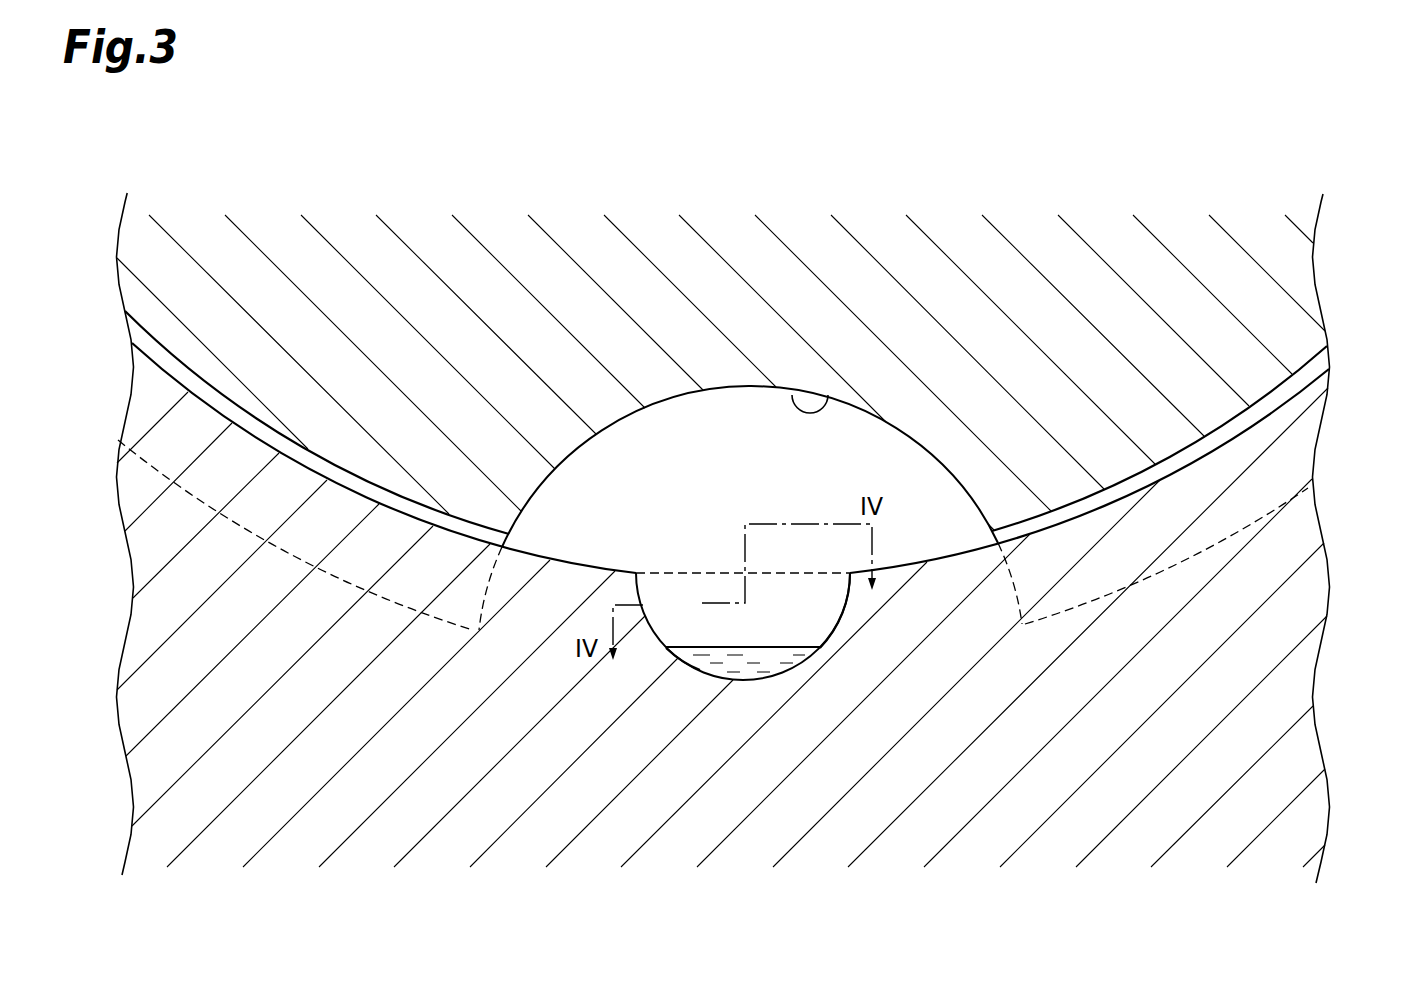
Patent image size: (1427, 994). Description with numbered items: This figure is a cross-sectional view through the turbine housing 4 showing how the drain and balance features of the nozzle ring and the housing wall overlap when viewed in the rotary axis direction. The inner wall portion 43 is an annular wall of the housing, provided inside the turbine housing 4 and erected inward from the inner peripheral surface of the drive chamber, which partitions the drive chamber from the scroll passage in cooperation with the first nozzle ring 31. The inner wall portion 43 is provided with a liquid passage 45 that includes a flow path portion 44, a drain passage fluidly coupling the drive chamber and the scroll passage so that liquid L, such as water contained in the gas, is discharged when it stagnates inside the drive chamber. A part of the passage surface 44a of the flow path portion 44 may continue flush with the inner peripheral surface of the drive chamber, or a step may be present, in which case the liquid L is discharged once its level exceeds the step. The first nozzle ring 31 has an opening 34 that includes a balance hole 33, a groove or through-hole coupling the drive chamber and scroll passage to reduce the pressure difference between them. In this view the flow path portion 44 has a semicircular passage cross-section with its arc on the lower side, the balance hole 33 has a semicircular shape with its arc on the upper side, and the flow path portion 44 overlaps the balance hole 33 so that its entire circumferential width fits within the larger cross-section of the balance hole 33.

The turbine housing 4 is at (1334, 581).
The first nozzle ring 31 is at (1294, 260).
The balance hole 33 is at (826, 399).
The opening 34 is at (670, 390).
The inner wall portion 43 is at (1208, 462).
The flow path portion 44 is at (648, 587).
The passage surface 44a is at (843, 604).
The liquid passage 45 is at (655, 645).
The liquid L is at (770, 660).